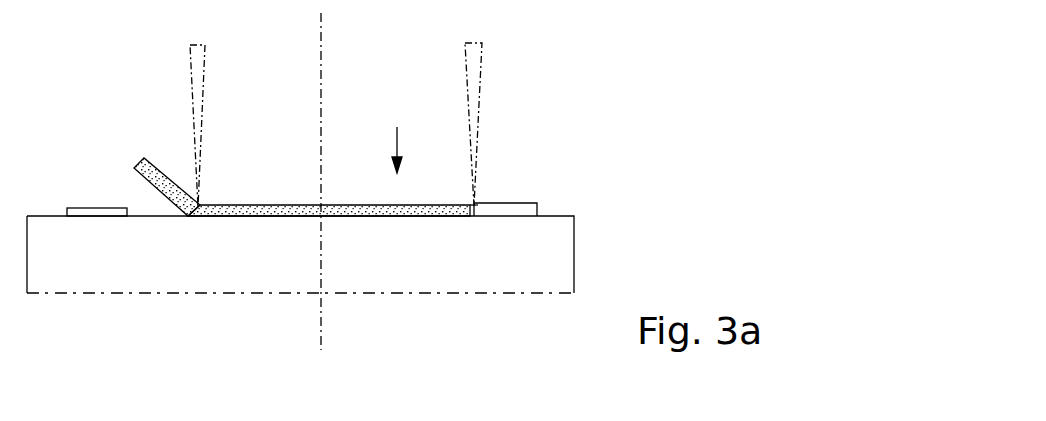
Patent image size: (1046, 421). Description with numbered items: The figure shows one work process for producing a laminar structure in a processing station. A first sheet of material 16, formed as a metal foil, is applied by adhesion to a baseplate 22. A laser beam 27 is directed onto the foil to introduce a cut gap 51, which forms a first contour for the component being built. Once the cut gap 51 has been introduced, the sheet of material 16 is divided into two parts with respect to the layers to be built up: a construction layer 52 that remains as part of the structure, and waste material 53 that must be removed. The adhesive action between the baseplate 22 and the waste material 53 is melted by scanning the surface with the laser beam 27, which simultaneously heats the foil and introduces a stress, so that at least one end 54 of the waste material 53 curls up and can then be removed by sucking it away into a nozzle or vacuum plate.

The first sheet of material 16 is at (401, 132).
The baseplate 22 is at (76, 270).
The laser beam 27 is at (195, 100).
The cut gap 51 is at (478, 206).
The construction layer 52 is at (502, 208).
The waste material 53 is at (358, 207).
The end of the waste material 54 is at (135, 135).